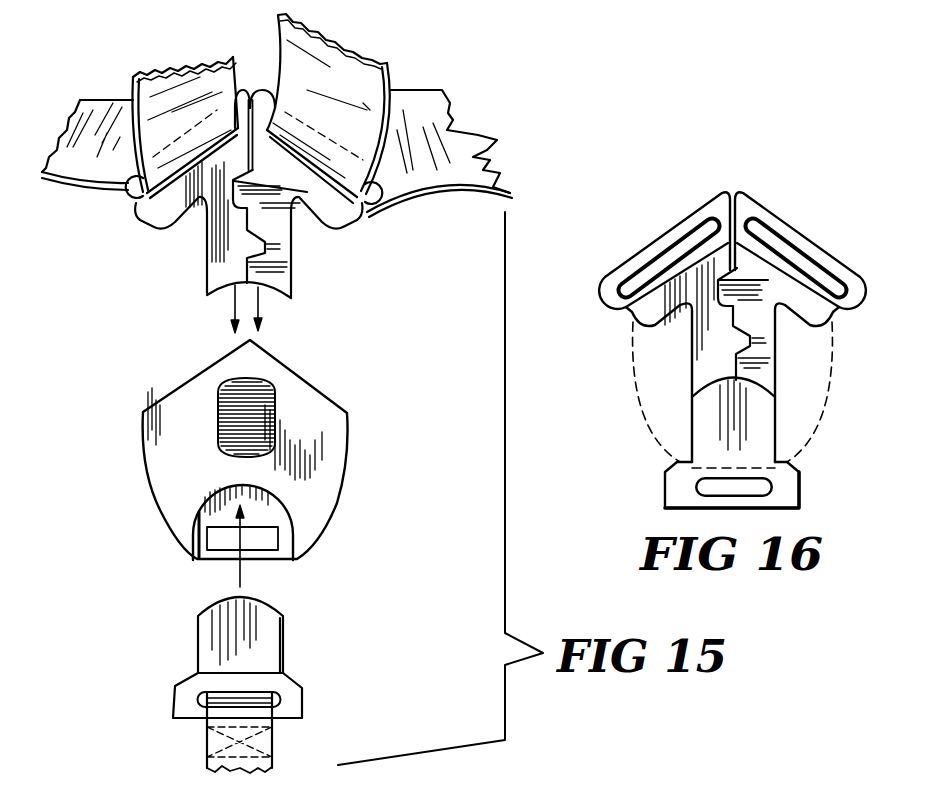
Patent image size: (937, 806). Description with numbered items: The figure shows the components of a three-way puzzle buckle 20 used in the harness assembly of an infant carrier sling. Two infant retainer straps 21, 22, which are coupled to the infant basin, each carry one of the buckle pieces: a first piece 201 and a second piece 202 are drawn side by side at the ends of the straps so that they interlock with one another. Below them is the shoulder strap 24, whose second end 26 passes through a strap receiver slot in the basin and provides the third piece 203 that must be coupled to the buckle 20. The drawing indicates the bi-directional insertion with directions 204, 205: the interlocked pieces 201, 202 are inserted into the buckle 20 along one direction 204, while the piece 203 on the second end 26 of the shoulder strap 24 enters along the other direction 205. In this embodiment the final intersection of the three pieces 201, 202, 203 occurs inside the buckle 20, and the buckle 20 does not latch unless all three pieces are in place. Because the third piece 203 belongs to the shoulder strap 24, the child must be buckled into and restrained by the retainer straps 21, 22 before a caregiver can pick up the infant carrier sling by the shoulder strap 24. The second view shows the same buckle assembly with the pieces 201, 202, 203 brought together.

In FIG. 15, the buckle 20 is at (351, 496).
In FIG. 15, the infant retainer strap 21 is at (100, 98).
In FIG. 15, the infant retainer strap 22 is at (432, 86).
In FIG. 15, the shoulder strap 24 is at (202, 751).
In FIG. 15, the second end 26 is at (318, 683).
In FIG. 15, the piece 201 is at (223, 264).
In FIG. 16, the piece 201 is at (703, 340).
In FIG. 15, the piece 202 is at (283, 282).
In FIG. 16, the piece 202 is at (762, 323).
In FIG. 15, the piece 203 is at (222, 648).
In FIG. 16, the piece 203 is at (762, 427).
In FIG. 15, the insertion direction 204 is at (262, 305).
In FIG. 15, the insertion direction 205 is at (243, 580).